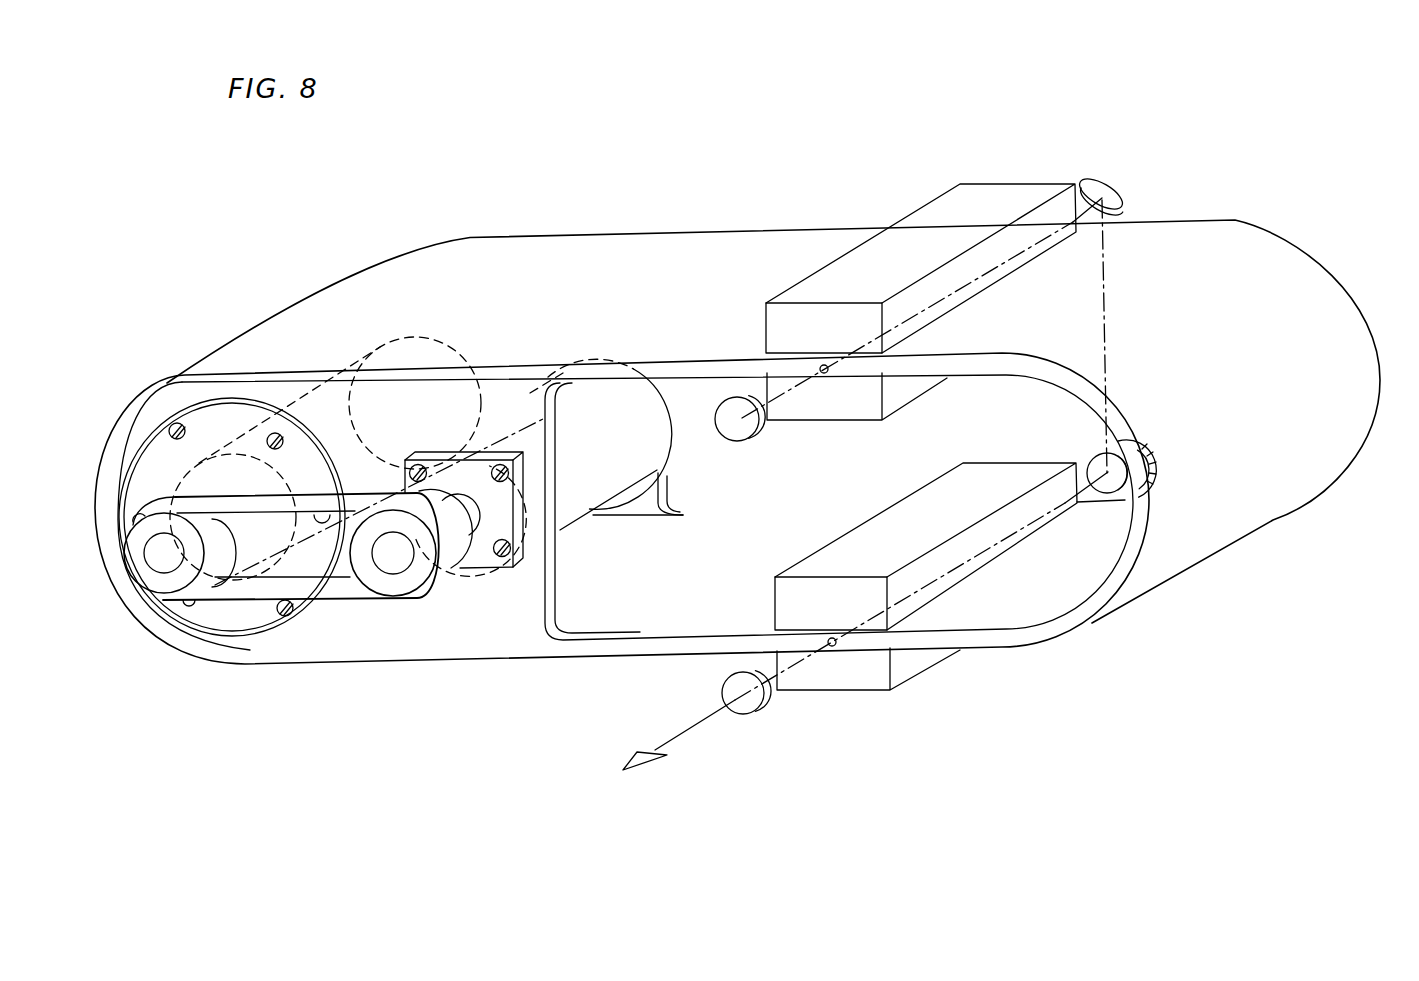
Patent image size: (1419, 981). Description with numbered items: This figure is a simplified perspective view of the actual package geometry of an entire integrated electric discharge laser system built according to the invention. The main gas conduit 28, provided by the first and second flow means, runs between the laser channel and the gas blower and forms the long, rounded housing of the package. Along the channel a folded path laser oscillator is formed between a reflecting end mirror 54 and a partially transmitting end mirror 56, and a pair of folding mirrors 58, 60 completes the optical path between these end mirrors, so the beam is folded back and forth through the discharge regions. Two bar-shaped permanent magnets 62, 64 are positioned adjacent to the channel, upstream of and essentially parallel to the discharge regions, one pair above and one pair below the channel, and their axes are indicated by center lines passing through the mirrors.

The main gas conduit 28 is at (597, 317).
The reflecting end mirror 54 is at (741, 440).
The partially transmitting end mirror 56 is at (747, 714).
The folding mirror 58 is at (1097, 178).
The folding mirror 60 is at (1103, 497).
The permanent magnet 62 is at (808, 288).
The permanent magnet 64 is at (833, 410).